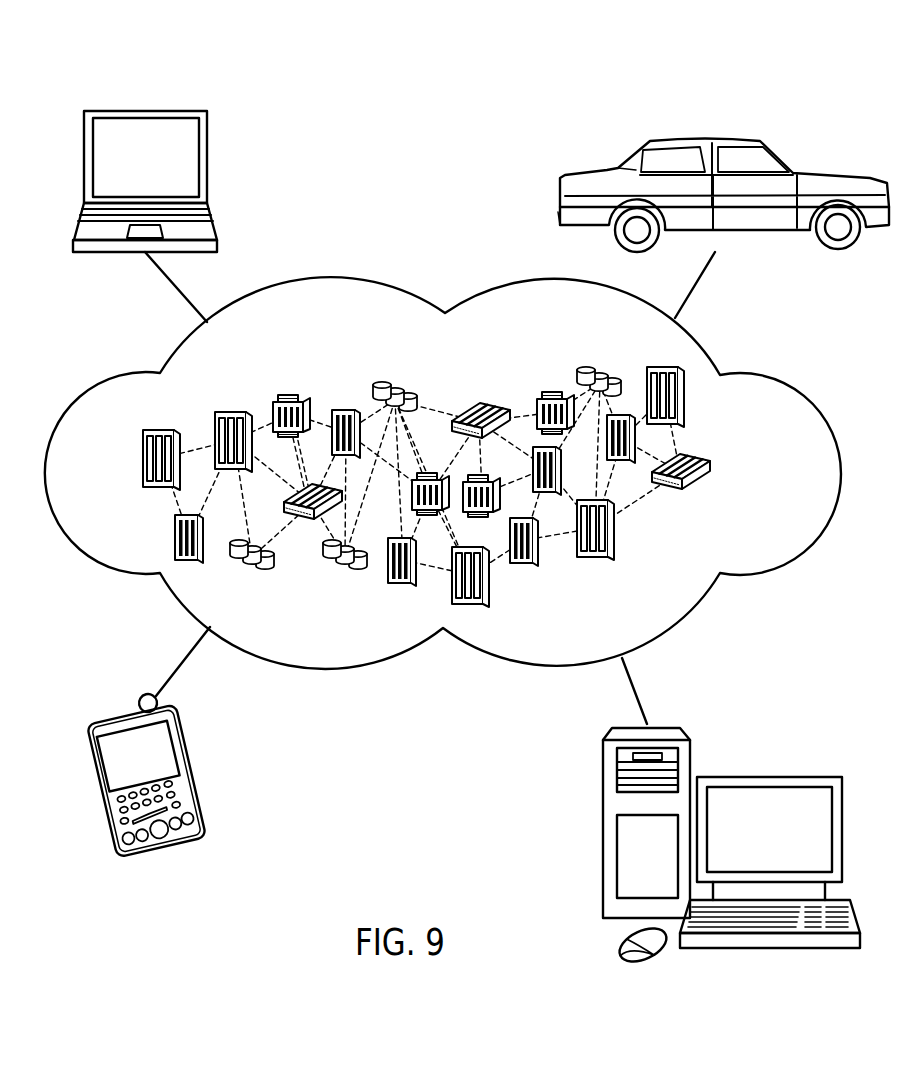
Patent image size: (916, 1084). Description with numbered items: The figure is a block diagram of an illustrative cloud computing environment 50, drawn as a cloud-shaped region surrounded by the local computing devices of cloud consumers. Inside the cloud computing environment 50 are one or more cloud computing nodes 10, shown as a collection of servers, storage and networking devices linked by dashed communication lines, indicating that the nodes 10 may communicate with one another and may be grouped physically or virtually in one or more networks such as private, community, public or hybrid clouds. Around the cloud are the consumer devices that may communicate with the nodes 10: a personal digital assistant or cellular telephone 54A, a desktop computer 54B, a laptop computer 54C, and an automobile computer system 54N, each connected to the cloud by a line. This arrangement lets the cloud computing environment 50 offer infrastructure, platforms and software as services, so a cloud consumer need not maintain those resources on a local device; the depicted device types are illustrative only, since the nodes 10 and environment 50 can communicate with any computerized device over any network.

The cloud computing node 10 is at (717, 471).
The cloud computing environment 50 is at (443, 473).
The personal digital assistant or cellular telephone 54A is at (122, 708).
The desktop computer 54B is at (770, 775).
The laptop computer 54C is at (147, 108).
The automobile computer system 54N is at (703, 135).